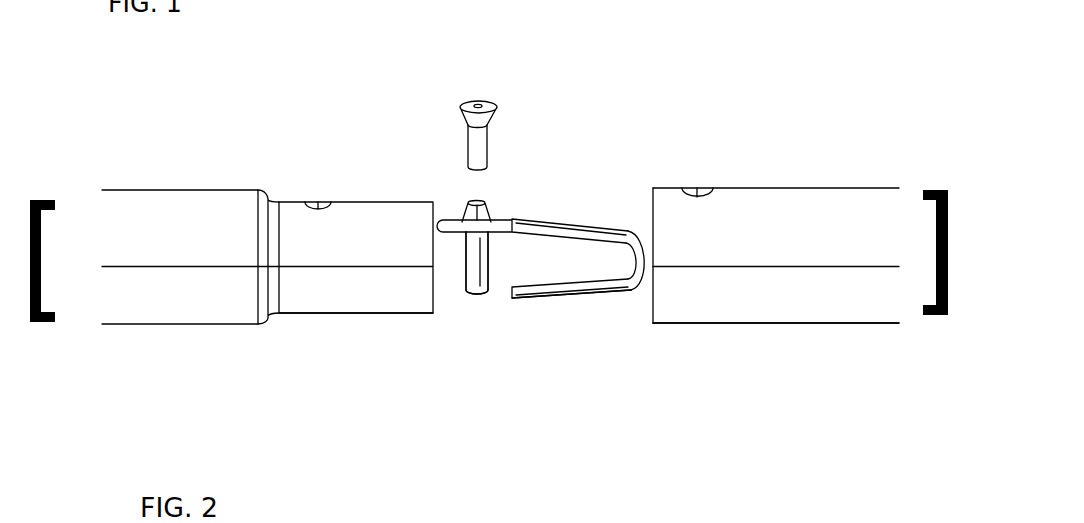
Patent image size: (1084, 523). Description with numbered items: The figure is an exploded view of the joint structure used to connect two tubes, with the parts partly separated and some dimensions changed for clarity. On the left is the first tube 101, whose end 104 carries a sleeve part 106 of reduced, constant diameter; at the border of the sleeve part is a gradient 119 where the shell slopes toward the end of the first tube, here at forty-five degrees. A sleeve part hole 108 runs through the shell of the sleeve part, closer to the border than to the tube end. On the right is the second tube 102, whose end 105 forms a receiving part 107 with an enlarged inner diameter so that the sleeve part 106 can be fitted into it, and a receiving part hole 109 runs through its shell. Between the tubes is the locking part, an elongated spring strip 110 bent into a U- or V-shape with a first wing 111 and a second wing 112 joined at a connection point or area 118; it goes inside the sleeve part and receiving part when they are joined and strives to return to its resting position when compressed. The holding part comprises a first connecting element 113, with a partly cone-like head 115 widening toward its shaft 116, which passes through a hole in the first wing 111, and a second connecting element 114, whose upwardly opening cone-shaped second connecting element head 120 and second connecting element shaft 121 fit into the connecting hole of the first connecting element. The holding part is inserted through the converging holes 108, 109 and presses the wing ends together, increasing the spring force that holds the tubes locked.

The first tube 101 is at (170, 186).
The second tube 102 is at (782, 184).
The end of the first tube 104 is at (433, 313).
The end of the second tube 105 is at (653, 322).
The sleeve part 106 is at (352, 313).
The receiving part 107 is at (707, 302).
The sleeve part hole 108 is at (320, 200).
The receiving part hole 109 is at (692, 186).
The spring strip 110 is at (595, 302).
The first wing 111 is at (540, 218).
The second wing 112 is at (540, 300).
The first connecting element 113 is at (477, 300).
The second connecting element 114 is at (484, 85).
The head 115 is at (467, 205).
The shaft 116 is at (488, 262).
The connection point or area 118 is at (630, 230).
The gradient 119 is at (270, 323).
The second connecting element head 120 is at (473, 100).
The second connecting element shaft 121 is at (485, 143).